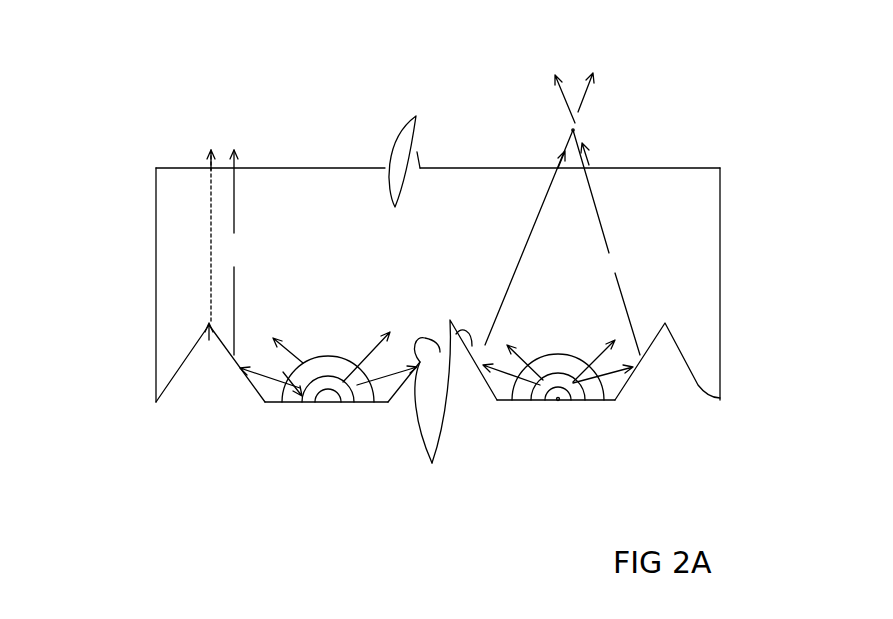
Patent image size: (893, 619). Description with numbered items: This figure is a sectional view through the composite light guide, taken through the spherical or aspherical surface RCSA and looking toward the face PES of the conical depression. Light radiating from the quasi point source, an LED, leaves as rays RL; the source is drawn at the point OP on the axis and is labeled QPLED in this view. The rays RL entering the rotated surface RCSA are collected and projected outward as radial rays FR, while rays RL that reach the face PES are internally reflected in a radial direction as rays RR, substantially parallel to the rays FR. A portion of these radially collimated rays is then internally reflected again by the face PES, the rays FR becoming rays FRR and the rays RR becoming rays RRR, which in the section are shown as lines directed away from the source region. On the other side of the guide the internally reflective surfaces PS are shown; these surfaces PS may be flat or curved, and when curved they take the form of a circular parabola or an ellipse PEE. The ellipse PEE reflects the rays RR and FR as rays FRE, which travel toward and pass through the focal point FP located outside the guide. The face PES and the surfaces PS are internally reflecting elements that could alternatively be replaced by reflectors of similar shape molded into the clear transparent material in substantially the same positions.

The reflected rays toward focal point FRE is at (558, 166).
The focal point FP is at (575, 128).
The internally reflected rays of RR RRR is at (211, 253).
The internally reflected rays of FR FRR is at (237, 300).
The radial rays FR is at (262, 375).
The internally reflected radial rays RR is at (283, 390).
The rays radiating from quasi point source RL is at (320, 392).
The quantum photonic LED QPLED is at (325, 403).
The face of conical depression PES is at (454, 412).
The spherical or aspherical surface RCSA is at (540, 400).
The optical point OP is at (558, 402).
The element LED is at (557, 402).
The ellipse PEE is at (658, 345).
The internally reflective surfaces PS is at (635, 374).